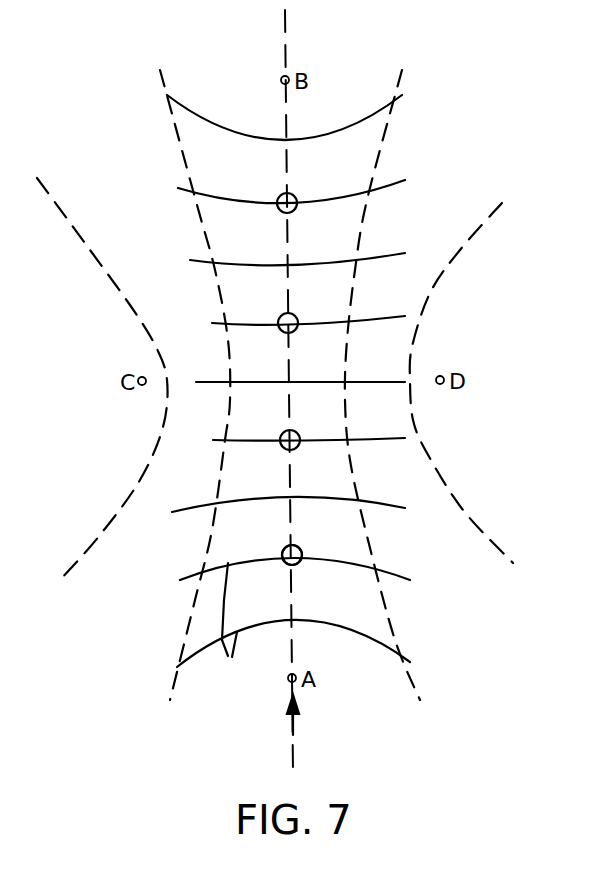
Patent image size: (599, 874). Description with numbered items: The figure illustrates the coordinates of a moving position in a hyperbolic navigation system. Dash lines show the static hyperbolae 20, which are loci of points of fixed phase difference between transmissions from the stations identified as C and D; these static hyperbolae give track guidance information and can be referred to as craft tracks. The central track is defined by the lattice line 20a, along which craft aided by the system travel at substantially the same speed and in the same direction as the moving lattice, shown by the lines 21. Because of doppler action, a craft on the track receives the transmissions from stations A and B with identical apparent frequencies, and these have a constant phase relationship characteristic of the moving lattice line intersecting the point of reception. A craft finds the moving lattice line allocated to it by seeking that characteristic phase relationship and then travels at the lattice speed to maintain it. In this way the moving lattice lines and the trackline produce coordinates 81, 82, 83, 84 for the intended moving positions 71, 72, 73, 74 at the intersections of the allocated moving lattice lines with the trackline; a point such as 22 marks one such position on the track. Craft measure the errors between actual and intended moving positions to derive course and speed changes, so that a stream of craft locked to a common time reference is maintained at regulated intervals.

The static hyperbolae 20 is at (367, 215).
The lattice line defining the trackline 20a is at (286, 50).
The moving lattice lines 21 is at (229, 627).
The aperture point 22 is at (299, 548).
The intended moving position 71 is at (304, 564).
The intended moving position 72 is at (303, 450).
The intended moving position 73 is at (302, 333).
The intended moving position 74 is at (301, 214).
The coordinate 81 is at (282, 576).
The coordinate 82 is at (297, 442).
The coordinate 83 is at (295, 326).
The coordinate 84 is at (276, 190).